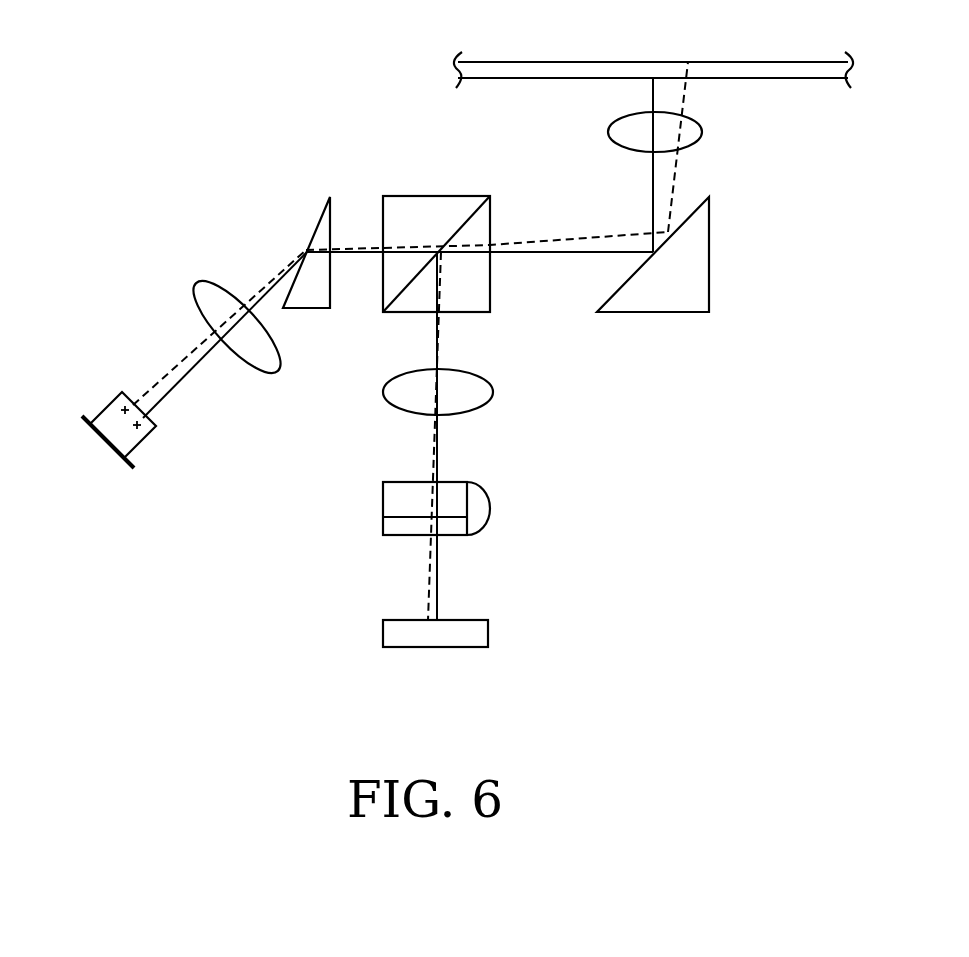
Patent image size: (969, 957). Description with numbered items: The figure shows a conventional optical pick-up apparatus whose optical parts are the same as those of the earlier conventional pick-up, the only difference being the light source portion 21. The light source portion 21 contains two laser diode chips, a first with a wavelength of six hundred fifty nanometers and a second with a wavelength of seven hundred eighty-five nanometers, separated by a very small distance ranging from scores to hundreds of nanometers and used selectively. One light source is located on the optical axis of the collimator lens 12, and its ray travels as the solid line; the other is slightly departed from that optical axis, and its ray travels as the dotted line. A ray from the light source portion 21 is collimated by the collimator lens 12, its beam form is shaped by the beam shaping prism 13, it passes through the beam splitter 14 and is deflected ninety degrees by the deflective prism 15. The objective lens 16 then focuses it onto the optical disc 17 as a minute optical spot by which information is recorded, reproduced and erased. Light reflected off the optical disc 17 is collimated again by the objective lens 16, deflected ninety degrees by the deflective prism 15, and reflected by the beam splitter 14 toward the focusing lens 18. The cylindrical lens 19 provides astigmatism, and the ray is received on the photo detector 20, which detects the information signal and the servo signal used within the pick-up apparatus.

The collimator lens 12 is at (194, 307).
The beam shaping prism 13 is at (305, 241).
The beam splitter 14 is at (441, 195).
The deflective prism 15 is at (709, 257).
The objective lens 16 is at (702, 132).
The optical disc 17 is at (705, 64).
The focusing lens 18 is at (493, 391).
The cylindrical lens 19 is at (490, 500).
The photo detector 20 is at (488, 630).
The light source portion 21 is at (85, 431).